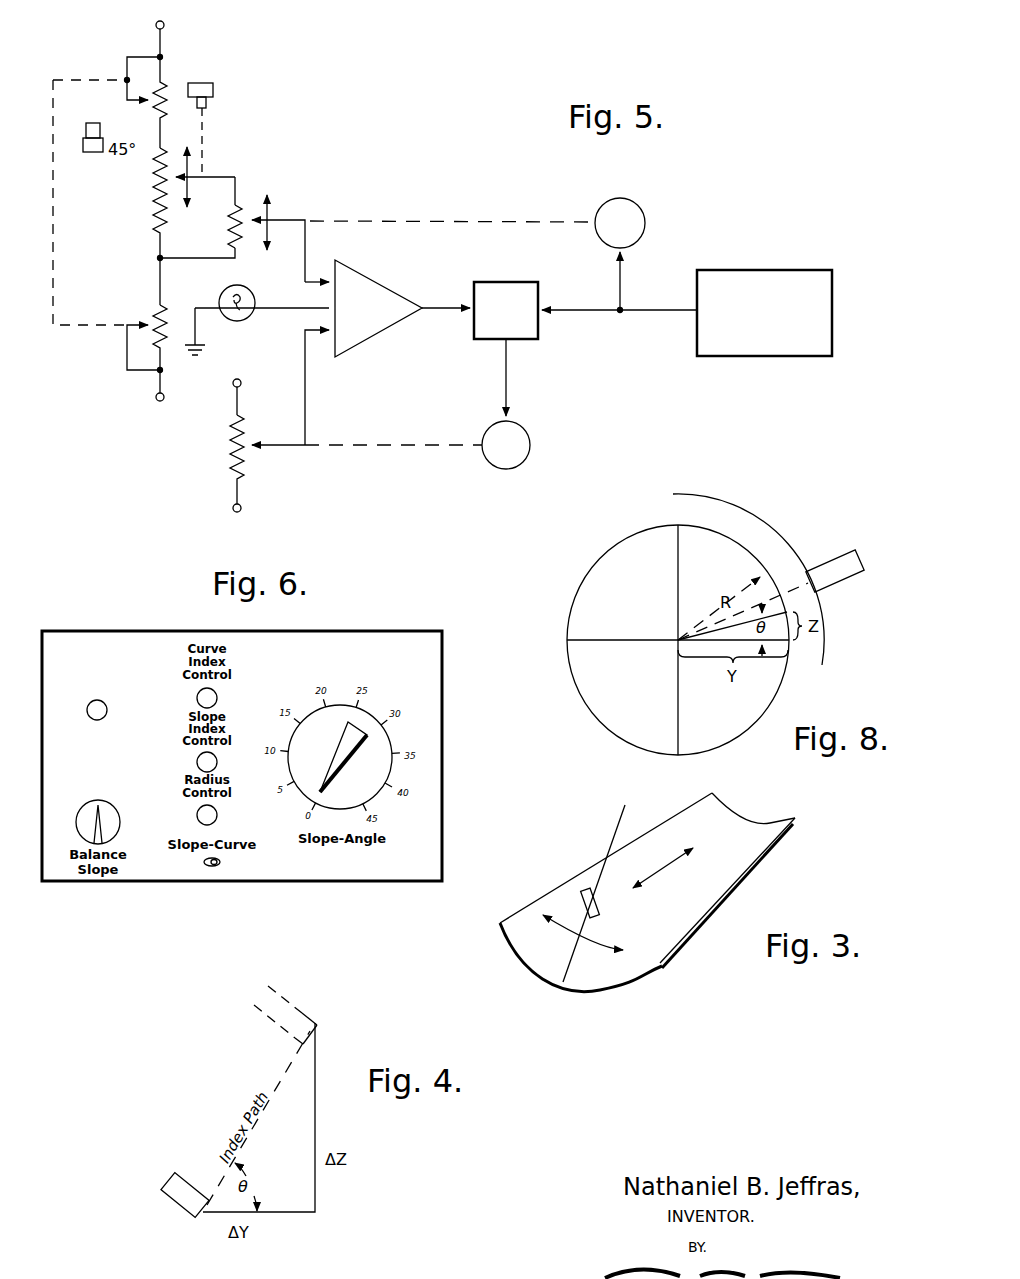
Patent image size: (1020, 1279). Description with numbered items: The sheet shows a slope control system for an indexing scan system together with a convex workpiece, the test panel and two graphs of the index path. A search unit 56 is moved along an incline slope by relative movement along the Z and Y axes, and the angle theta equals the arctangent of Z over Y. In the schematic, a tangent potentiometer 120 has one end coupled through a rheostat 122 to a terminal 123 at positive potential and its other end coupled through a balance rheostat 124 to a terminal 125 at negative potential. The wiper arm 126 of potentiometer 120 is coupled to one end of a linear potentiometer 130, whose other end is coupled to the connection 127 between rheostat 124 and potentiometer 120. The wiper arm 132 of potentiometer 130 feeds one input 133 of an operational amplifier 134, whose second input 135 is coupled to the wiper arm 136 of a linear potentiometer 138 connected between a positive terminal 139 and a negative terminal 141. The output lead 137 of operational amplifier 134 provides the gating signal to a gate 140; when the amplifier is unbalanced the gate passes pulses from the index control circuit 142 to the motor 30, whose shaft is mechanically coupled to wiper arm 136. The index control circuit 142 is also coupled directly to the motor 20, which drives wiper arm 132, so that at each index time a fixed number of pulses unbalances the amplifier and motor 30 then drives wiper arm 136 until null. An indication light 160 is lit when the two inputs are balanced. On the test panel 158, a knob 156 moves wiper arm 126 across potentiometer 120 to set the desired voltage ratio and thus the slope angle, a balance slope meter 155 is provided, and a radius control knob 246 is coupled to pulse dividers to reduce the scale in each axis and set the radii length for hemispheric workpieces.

In FIG. 5, the motor 20 is at (640, 222).
In FIG. 5, the motor 30 is at (495, 465).
In FIG. 8, the search unit 56 is at (841, 562).
In FIG. 3, the search unit 56 is at (586, 898).
In FIG. 4, the search unit 56 is at (173, 1177).
In FIG. 5, the potentiometer 120 is at (164, 179).
In FIG. 5, the rheostat 122 is at (165, 85).
In FIG. 5, the terminal 123 is at (166, 28).
In FIG. 5, the balance rheostat 124 is at (158, 315).
In FIG. 5, the terminal 125 is at (157, 401).
In FIG. 5, the wiper arm 126 is at (232, 177).
In FIG. 5, the connection 127 is at (158, 258).
In FIG. 5, the linear potentiometer 130 is at (230, 224).
In FIG. 5, the wiper arm 132 is at (287, 219).
In FIG. 5, the input 133 is at (318, 281).
In FIG. 5, the operational amplifier 134 is at (380, 300).
In FIG. 5, the input 135 is at (326, 335).
In FIG. 5, the wiper arm 136 is at (282, 448).
In FIG. 5, the output lead 137 is at (441, 316).
In FIG. 5, the linear potentiometer 138 is at (232, 450).
In FIG. 5, the terminal 139 is at (242, 385).
In FIG. 5, the gate 140 is at (496, 282).
In FIG. 5, the terminal 141 is at (241, 508).
In FIG. 5, the index control circuit 142 is at (768, 270).
In FIG. 5, the balance slope meter 155 is at (84, 152).
In FIG. 6, the balance slope meter 155 is at (85, 804).
In FIG. 5, the knob 156 is at (213, 95).
In FIG. 6, the test panel 158 is at (442, 718).
In FIG. 5, the indication light 160 is at (243, 320).
In FIG. 6, the indication light 160 is at (105, 702).
In FIG. 6, the radius control knob 246 is at (218, 815).